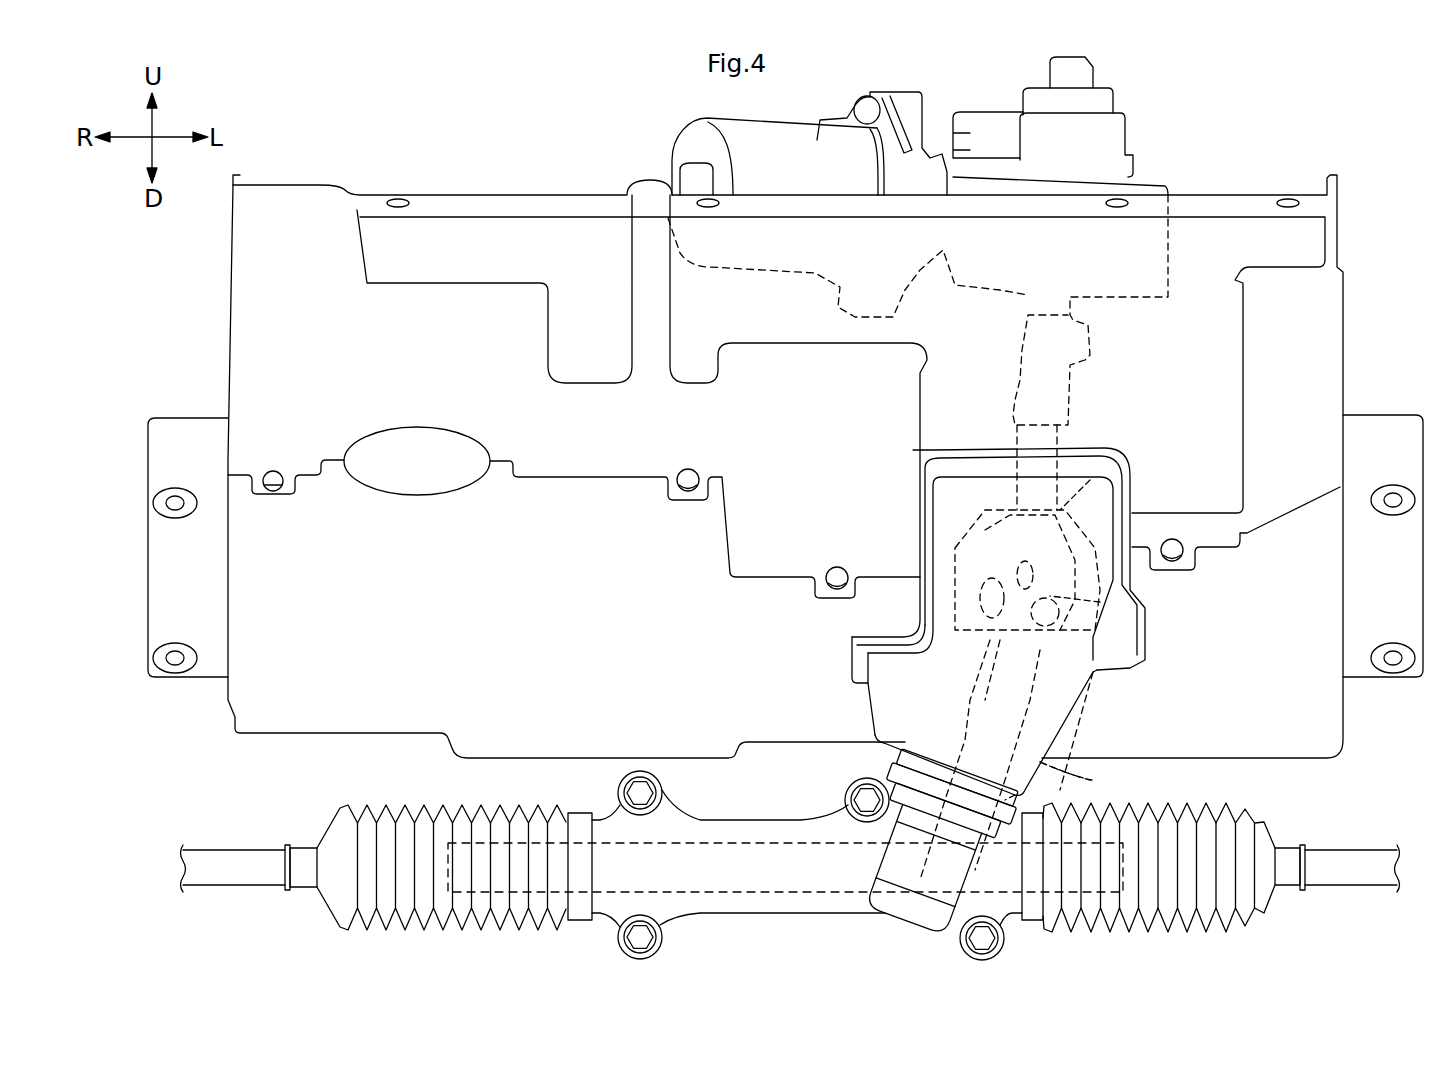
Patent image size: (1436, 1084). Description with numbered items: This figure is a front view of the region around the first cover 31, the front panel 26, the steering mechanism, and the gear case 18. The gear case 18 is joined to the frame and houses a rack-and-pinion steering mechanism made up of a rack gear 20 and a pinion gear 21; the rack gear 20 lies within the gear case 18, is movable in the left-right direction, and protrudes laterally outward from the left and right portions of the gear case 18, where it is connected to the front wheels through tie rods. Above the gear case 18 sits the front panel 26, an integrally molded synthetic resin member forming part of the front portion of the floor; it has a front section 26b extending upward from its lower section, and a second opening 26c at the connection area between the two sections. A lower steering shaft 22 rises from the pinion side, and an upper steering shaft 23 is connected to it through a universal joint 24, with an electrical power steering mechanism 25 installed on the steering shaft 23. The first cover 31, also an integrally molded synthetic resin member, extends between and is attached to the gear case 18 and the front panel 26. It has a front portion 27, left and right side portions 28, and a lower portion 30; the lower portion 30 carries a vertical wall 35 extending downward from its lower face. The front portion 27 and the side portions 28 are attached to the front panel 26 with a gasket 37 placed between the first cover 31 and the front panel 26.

The gear case 18 is at (738, 907).
The rack gear 20 is at (763, 892).
The pinion gear 21 is at (883, 860).
The steering shaft 22 is at (1067, 781).
The steering shaft 23 is at (1090, 480).
The universal joint 24 is at (1078, 690).
The electrical power steering mechanism 25 is at (732, 132).
The front panel 26 is at (785, 427).
The front section 26b is at (1317, 703).
The second opening 26c is at (1100, 602).
The front portion 27 is at (927, 672).
The side portions 28 is at (863, 695).
The lower portion 30 is at (990, 832).
The first cover 31 is at (915, 462).
The vertical wall 35 is at (910, 755).
The gasket 37 is at (918, 533).